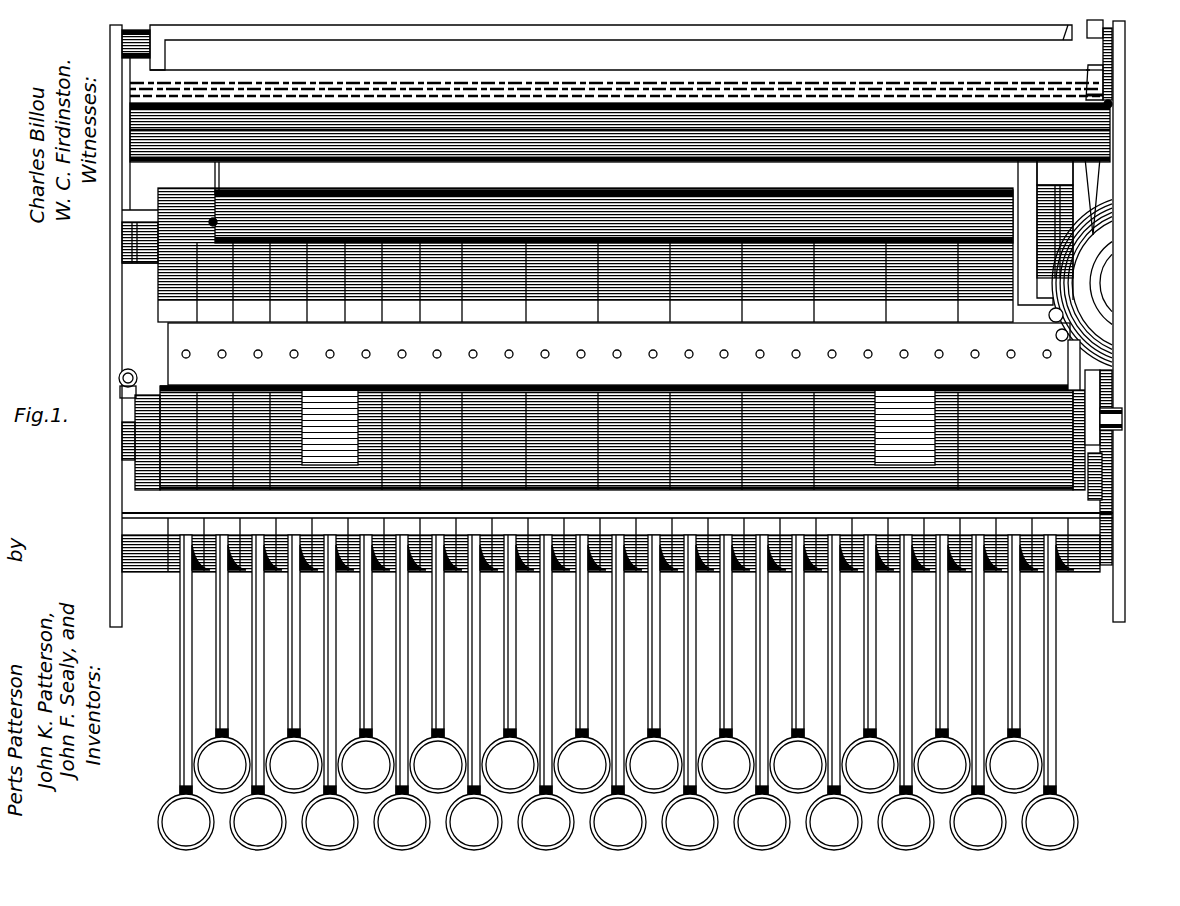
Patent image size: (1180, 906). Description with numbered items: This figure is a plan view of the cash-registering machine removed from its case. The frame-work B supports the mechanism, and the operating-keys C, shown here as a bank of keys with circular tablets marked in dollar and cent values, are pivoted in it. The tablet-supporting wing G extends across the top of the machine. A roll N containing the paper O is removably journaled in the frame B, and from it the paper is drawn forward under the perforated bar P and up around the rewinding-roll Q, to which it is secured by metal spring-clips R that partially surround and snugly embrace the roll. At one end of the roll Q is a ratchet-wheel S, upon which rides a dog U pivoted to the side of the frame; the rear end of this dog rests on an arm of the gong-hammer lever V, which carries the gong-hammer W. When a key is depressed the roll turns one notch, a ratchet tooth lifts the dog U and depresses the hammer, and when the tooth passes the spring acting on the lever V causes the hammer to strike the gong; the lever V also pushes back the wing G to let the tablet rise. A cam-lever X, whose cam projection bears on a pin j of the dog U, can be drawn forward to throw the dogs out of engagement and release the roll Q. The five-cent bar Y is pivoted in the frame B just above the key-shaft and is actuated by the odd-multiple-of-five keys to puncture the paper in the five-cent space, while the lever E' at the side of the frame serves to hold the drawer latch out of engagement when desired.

The frame-work B is at (615, 324).
The tablet-supporting wing G is at (606, 47).
The roll N is at (137, 268).
The paper O is at (585, 255).
The perforated bar P is at (619, 353).
The rewinding-roll Q is at (258, 393).
The metal spring-clips R is at (610, 438).
The lever E' is at (101, 412).
The gong-hammer W is at (1100, 172).
The gong-hammer lever V is at (1080, 80).
The gear wheel K is at (1080, 295).
The dog U is at (1098, 440).
The ratchet-wheel S is at (1108, 503).
The pin or projection j is at (1124, 418).
The cam-lever X is at (1104, 468).
The bar Y is at (617, 529).
The operating-keys C is at (618, 692).